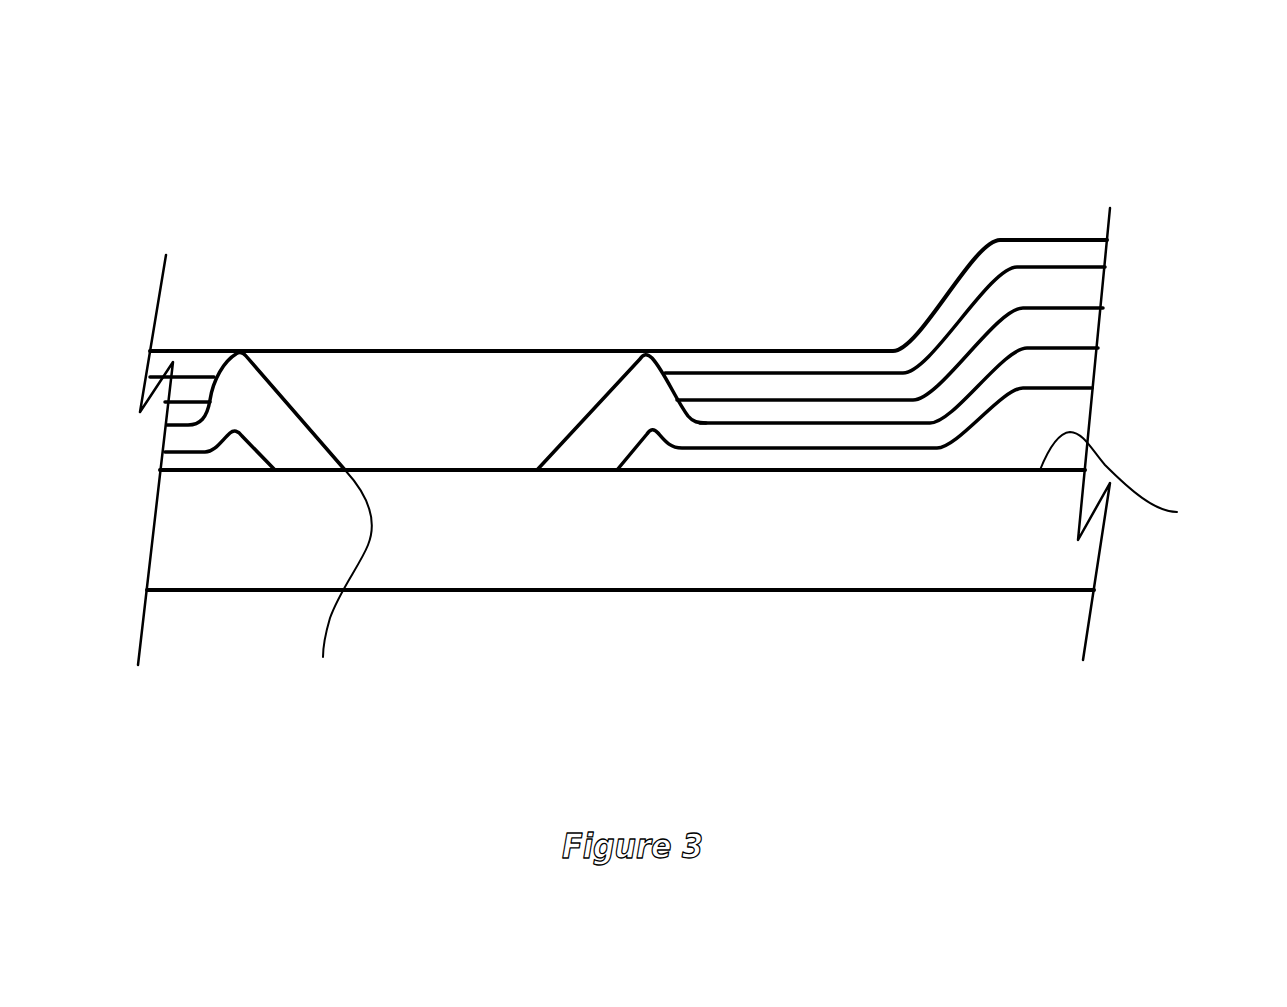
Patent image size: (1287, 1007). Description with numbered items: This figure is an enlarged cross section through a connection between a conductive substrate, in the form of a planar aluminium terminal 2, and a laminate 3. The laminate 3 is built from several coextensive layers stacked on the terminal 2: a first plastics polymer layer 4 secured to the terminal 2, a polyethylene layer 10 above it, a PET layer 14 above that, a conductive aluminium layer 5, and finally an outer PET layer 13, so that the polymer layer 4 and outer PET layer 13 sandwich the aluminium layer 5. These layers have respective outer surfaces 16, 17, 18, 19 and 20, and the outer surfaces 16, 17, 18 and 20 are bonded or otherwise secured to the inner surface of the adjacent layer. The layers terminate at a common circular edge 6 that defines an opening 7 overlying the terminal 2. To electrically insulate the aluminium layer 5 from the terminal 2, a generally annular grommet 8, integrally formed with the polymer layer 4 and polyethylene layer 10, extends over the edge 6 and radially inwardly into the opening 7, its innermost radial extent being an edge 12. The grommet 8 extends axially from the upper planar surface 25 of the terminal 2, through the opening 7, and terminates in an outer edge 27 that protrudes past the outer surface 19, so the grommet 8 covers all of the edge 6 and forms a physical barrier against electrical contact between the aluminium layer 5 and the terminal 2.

The planar aluminium terminal 2 is at (617, 565).
The laminate 3 is at (970, 165).
The polymer layer 4 is at (1080, 410).
The conductive aluminium layer 5 is at (1088, 285).
The circular edge 6 is at (215, 394).
The opening 7 is at (480, 186).
The grommet 8 is at (292, 432).
The polyethylene layer 10 is at (1083, 368).
The edge 12 is at (339, 585).
The outer PET layer 13 is at (1092, 253).
The PET layer 14 is at (1085, 330).
The outer surface 16 is at (702, 440).
The outer surface 17 is at (737, 377).
The outer surface 18 is at (777, 421).
The outer surface 19 is at (802, 397).
The outer surface 20 is at (857, 398).
The upper planar surface 25 is at (1129, 480).
The outer edge 27 is at (512, 348).